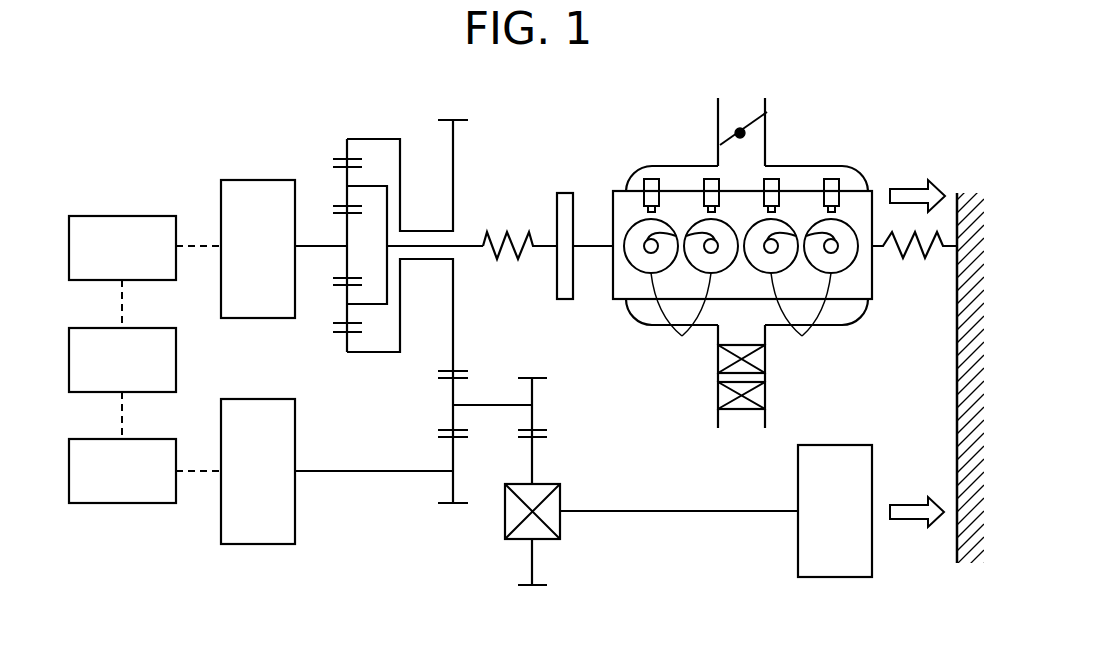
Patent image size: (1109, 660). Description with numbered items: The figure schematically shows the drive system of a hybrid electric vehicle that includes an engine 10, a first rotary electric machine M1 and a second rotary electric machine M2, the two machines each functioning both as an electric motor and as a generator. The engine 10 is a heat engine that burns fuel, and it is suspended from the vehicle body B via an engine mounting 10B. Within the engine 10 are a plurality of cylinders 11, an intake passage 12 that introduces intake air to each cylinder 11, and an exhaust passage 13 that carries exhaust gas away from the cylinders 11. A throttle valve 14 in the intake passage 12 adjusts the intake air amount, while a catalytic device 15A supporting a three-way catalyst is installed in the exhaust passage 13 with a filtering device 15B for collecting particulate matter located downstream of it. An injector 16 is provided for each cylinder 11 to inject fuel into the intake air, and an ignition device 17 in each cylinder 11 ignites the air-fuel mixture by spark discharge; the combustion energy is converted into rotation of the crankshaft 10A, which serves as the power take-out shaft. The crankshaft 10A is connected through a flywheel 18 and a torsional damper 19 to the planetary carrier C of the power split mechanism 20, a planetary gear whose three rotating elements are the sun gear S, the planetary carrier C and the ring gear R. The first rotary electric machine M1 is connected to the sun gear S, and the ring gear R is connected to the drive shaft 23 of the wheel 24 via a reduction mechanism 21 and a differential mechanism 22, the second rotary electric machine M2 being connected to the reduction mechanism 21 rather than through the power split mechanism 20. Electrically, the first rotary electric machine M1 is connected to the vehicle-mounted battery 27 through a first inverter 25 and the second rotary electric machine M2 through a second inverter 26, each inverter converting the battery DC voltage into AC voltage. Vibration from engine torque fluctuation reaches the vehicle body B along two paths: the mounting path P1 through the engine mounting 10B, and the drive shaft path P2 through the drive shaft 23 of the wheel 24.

The engine 10 is at (625, 143).
The crankshaft 10A is at (595, 250).
The engine mounting 10B is at (905, 258).
The cylinders 11 is at (741, 318).
The intake passage 12 is at (767, 112).
The exhaust passage 13 is at (718, 419).
The throttle valve 14 is at (752, 128).
The catalytic device 15A is at (766, 365).
The filtering device 15B is at (766, 398).
The injector 16 is at (712, 179).
The ignition device 17 is at (688, 236).
The flywheel 18 is at (562, 193).
The torsional damper 19 is at (507, 232).
The power split mechanism 20 is at (378, 287).
The reduction mechanism 21 is at (440, 525).
The differential mechanism 22 is at (562, 503).
The drive shaft 23 is at (682, 513).
The wheel 24 is at (836, 577).
The first inverter 25 is at (122, 216).
The second inverter 26 is at (120, 503).
The vehicle-mounted battery 27 is at (176, 358).
The first rotary electric machine M1 is at (256, 180).
The second rotary electric machine M2 is at (275, 399).
The sun gear S is at (347, 230).
The planetary carrier C is at (387, 214).
The ring gear R is at (373, 352).
The mounting path P1 is at (917, 181).
The drive shaft path P2 is at (917, 498).
The vehicle body B is at (970, 563).